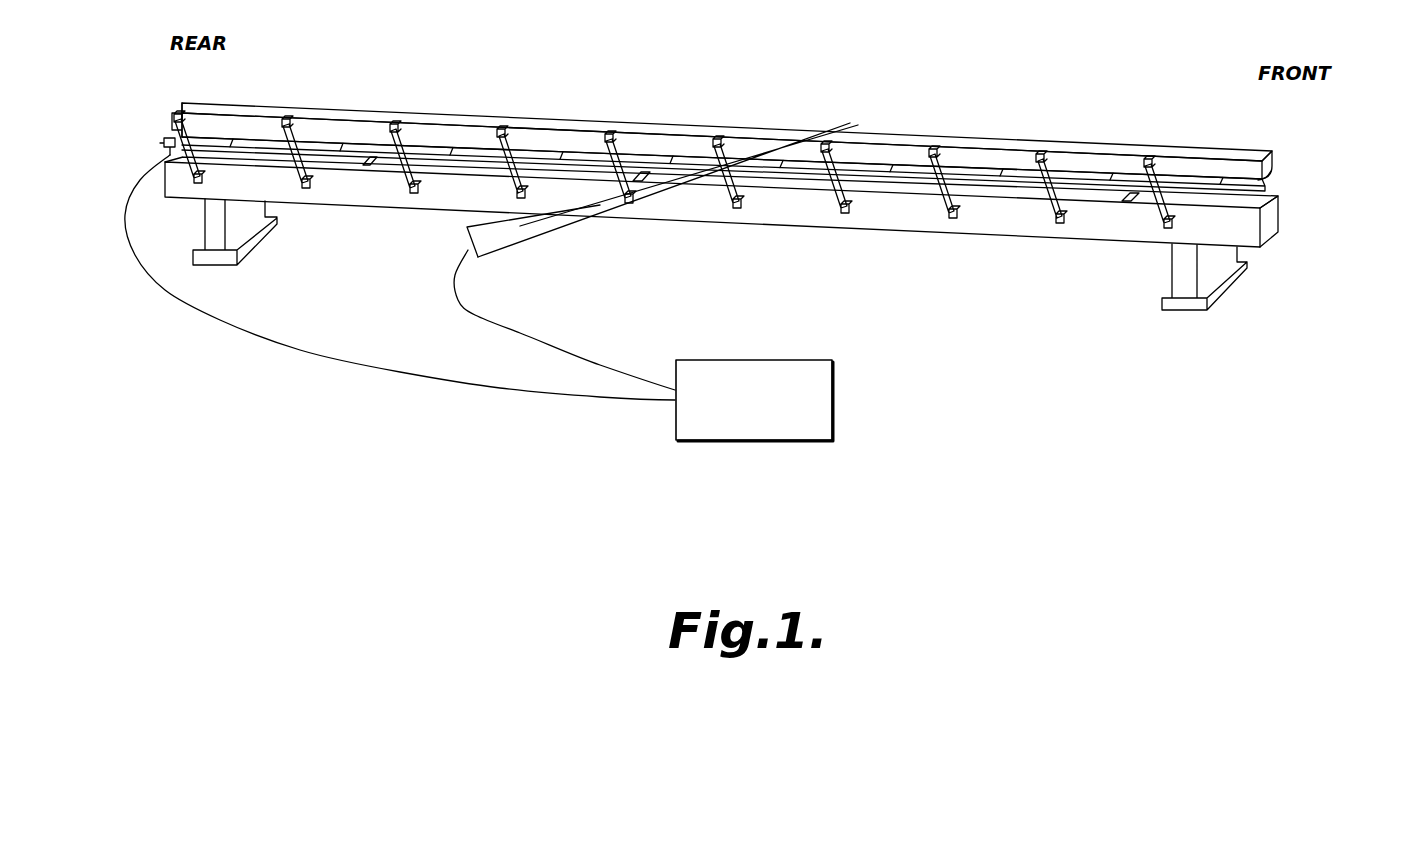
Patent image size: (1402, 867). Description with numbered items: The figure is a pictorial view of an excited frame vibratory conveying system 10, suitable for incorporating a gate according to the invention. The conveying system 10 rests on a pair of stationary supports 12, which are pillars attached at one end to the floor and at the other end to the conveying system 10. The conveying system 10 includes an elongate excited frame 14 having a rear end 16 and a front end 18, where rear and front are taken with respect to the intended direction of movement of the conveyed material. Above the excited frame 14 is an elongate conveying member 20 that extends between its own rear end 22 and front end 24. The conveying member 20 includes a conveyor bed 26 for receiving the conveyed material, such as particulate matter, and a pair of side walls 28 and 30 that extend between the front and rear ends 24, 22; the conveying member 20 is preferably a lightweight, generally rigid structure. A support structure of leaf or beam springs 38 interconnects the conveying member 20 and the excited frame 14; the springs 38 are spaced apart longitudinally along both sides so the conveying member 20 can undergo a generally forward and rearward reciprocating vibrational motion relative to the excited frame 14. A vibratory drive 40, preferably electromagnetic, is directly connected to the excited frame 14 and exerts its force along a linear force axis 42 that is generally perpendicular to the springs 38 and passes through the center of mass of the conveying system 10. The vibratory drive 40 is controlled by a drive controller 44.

The excited frame vibratory conveying system 10 is at (377, 487).
The stationary supports 12 is at (245, 216).
The excited frame 14 is at (954, 241).
The rear end 16 is at (165, 178).
The front end 18 is at (1278, 218).
The conveying member 20 is at (1062, 118).
The rear end 22 is at (172, 124).
The front end 24 is at (1273, 163).
The conveyor bed 26 is at (1272, 178).
The side wall 28 is at (567, 138).
The side wall 30 is at (903, 138).
The leaf or beam springs 38 is at (387, 146).
The vibratory drive 40 is at (495, 243).
The linear force axis 42 is at (850, 122).
The drive controller 44 is at (673, 407).